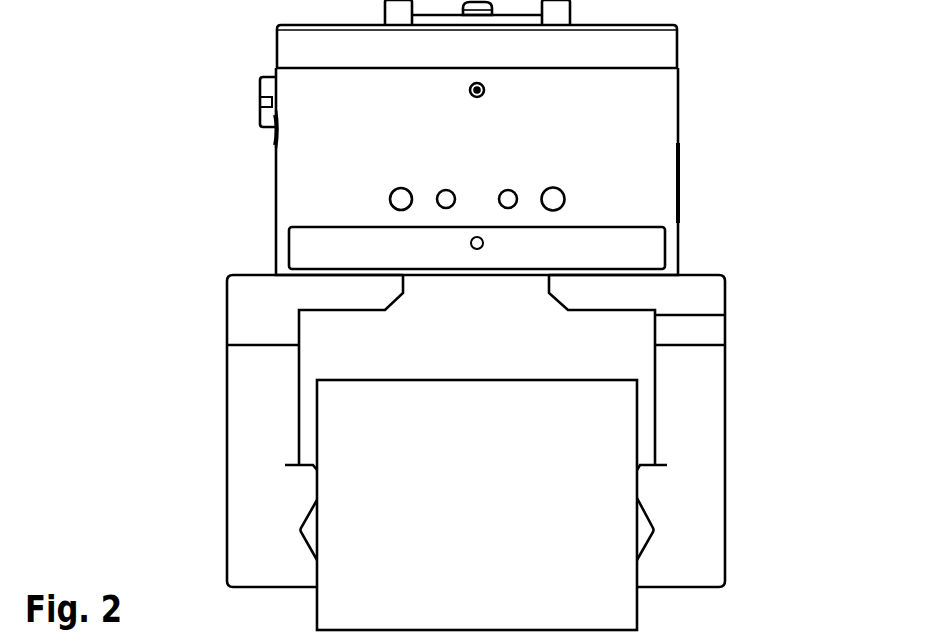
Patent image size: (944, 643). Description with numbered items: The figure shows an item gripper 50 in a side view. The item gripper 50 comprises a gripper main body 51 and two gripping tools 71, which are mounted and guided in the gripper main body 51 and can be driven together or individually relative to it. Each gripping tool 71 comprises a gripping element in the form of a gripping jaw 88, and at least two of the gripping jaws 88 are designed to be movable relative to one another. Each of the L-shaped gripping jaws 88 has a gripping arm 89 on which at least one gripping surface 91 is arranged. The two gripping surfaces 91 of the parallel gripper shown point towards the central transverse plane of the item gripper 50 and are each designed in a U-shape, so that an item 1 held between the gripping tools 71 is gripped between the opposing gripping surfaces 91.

The workpiece block 1 is at (413, 447).
The item gripper 50 is at (248, 223).
The gripper main body 51 is at (307, 139).
The gripping tool 71 is at (462, 423).
The gripping jaw 88 is at (250, 389).
The gripping arm 89 is at (690, 434).
The gripping surface 91 is at (637, 498).